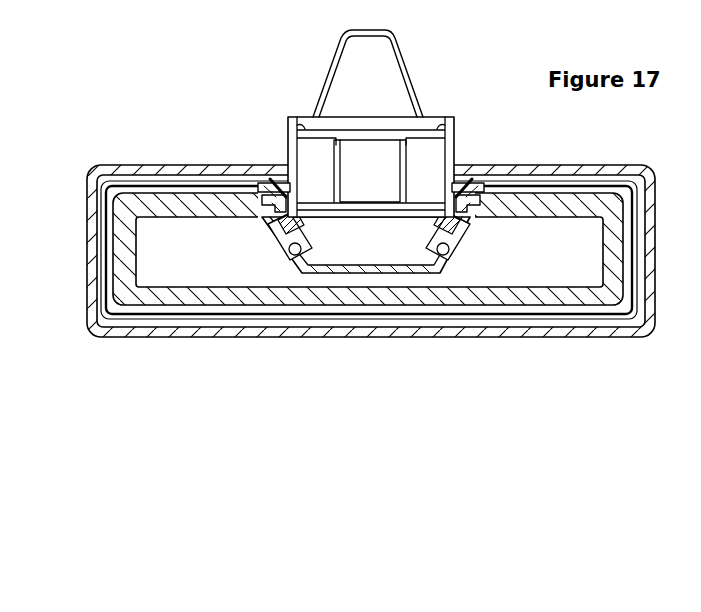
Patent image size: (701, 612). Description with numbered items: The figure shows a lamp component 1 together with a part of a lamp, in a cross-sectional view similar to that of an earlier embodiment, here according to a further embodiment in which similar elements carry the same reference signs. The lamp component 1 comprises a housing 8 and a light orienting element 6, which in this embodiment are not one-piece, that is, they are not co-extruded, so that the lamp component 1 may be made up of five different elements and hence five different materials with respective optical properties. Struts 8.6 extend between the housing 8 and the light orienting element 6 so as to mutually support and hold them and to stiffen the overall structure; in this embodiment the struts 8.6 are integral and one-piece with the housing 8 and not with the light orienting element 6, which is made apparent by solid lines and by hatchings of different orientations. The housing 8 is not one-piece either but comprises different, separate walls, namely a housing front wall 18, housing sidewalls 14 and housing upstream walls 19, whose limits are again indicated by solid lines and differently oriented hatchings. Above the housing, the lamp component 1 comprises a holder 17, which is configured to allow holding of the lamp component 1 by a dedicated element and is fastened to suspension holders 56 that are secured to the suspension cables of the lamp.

The lamp component 1 is at (611, 128).
The housing 8 is at (125, 347).
The housing upstream walls 19 is at (141, 172).
The housing sidewalls 14 is at (94, 263).
The housing front wall 18 is at (281, 330).
The light orienting element 6 is at (497, 295).
The holder 17 is at (283, 255).
The suspension holders 56 is at (455, 151).
The struts 8.6 is at (254, 200).